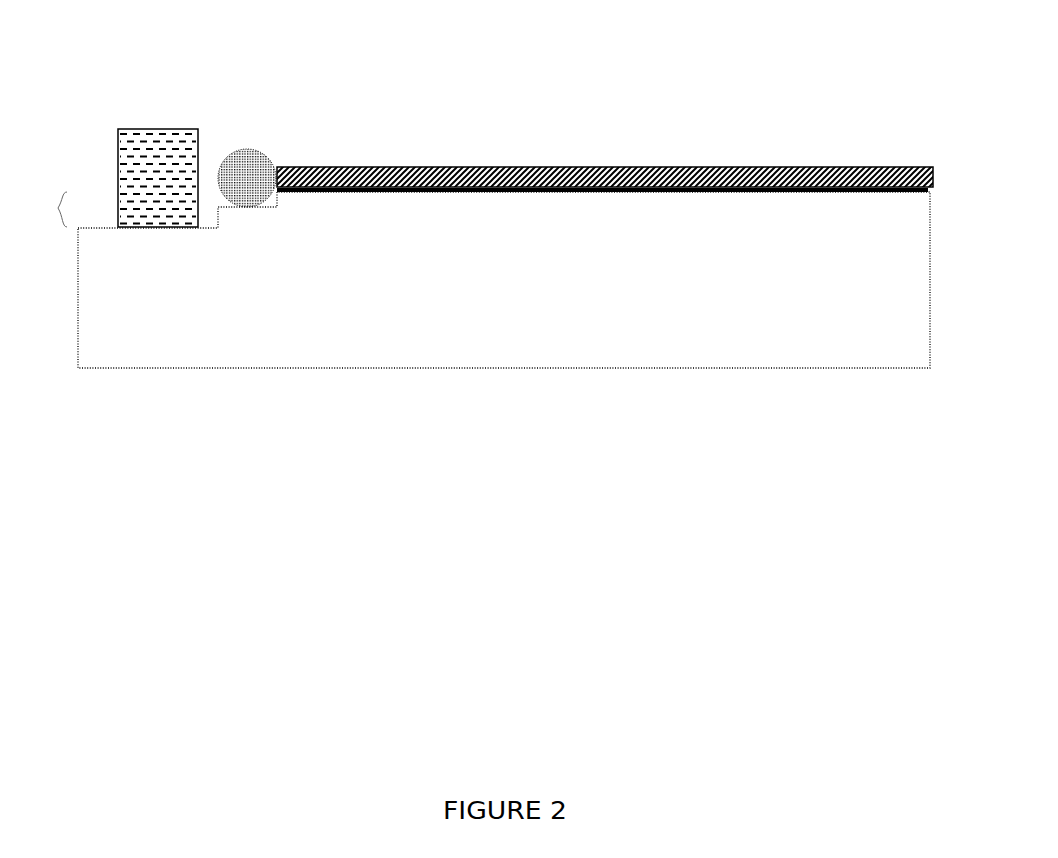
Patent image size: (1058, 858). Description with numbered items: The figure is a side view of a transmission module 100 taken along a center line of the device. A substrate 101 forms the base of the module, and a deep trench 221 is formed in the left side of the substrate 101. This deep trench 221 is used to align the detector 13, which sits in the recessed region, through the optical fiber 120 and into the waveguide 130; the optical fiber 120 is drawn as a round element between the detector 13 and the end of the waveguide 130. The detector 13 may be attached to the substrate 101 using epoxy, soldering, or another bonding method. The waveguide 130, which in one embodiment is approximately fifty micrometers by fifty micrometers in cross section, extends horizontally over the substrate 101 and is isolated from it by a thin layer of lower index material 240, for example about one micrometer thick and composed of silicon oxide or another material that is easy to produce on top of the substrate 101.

The transmission module 100 is at (805, 38).
The detector 13 is at (128, 129).
The optical fiber 120 is at (231, 152).
The waveguide 130 is at (422, 167).
The layer of lower index material 240 is at (573, 193).
The substrate 101 is at (758, 365).
The deep trench 221 is at (41, 209).